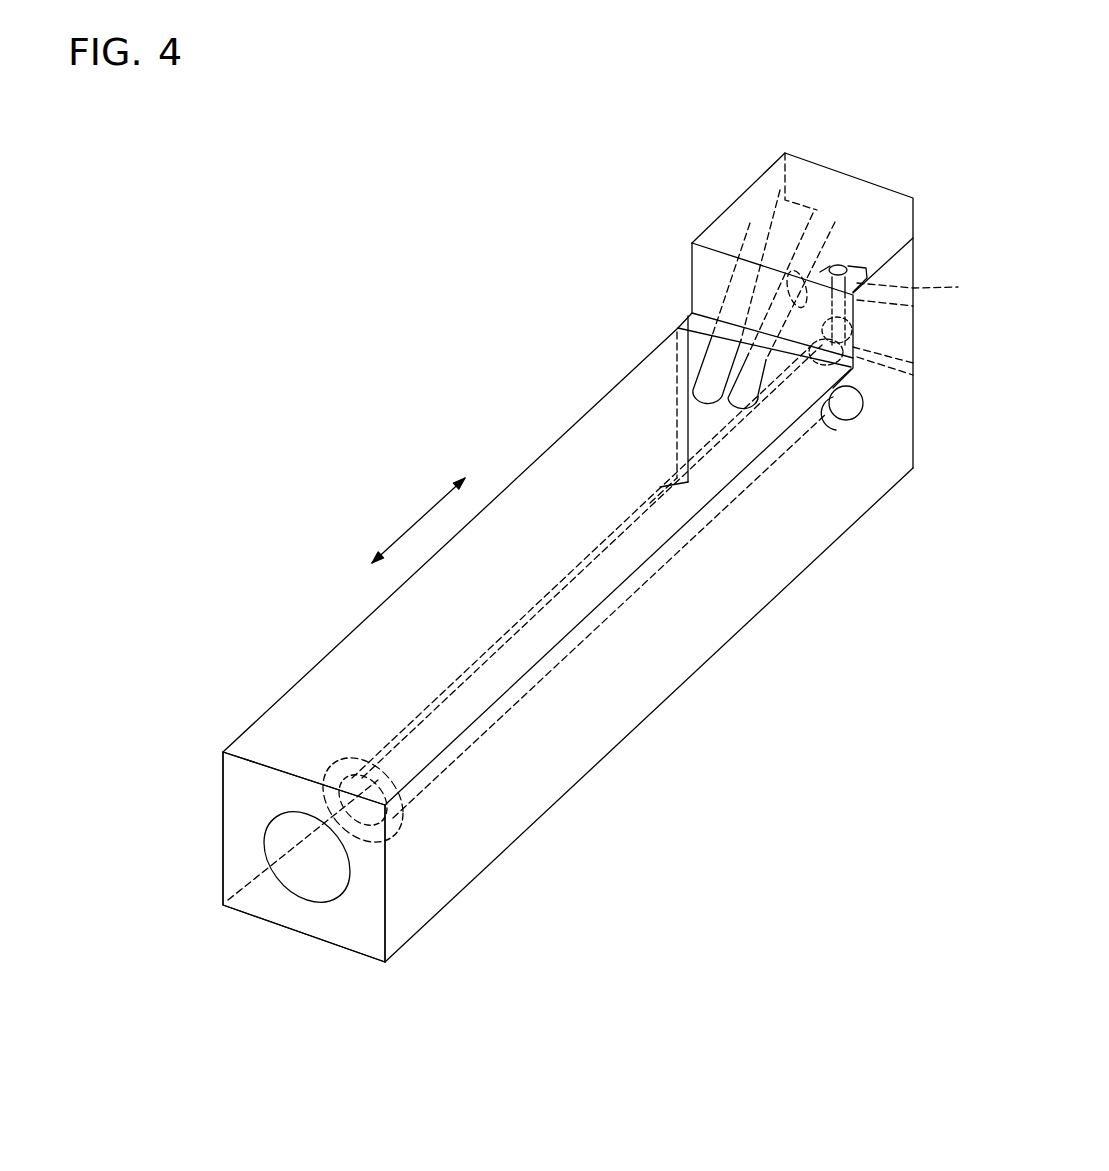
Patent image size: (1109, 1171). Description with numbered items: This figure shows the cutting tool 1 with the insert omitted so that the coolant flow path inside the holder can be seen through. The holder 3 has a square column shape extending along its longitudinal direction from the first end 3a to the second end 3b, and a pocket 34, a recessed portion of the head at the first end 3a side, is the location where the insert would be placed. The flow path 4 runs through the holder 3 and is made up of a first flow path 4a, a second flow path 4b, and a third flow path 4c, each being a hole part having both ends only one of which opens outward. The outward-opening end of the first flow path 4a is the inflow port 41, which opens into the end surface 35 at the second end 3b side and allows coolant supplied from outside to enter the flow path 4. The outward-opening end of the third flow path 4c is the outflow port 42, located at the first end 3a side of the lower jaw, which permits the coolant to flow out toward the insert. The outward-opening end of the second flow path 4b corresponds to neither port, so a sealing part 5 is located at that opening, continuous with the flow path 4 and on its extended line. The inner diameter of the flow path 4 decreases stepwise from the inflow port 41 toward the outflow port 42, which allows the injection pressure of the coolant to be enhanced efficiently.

The cutting tool 1 is at (975, 162).
The holder 3 is at (560, 434).
The first end 3a is at (845, 176).
The second end 3b is at (304, 857).
The end surface 35 is at (256, 902).
The inflow port 41 is at (265, 843).
The pocket 34 is at (750, 223).
The flow path 4 is at (613, 610).
The first flow path 4a is at (510, 703).
The second flow path 4b is at (913, 363).
The third flow path 4c is at (908, 309).
The outflow port 42 is at (838, 258).
The sealing part 5 is at (864, 413).